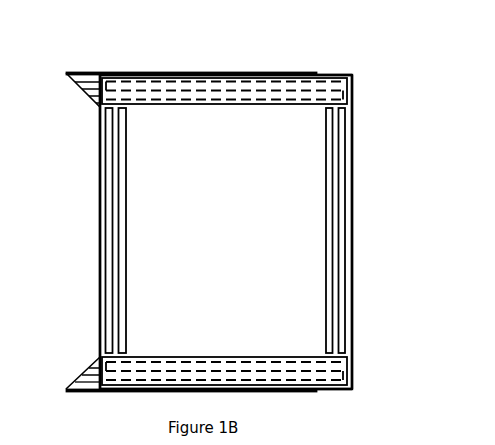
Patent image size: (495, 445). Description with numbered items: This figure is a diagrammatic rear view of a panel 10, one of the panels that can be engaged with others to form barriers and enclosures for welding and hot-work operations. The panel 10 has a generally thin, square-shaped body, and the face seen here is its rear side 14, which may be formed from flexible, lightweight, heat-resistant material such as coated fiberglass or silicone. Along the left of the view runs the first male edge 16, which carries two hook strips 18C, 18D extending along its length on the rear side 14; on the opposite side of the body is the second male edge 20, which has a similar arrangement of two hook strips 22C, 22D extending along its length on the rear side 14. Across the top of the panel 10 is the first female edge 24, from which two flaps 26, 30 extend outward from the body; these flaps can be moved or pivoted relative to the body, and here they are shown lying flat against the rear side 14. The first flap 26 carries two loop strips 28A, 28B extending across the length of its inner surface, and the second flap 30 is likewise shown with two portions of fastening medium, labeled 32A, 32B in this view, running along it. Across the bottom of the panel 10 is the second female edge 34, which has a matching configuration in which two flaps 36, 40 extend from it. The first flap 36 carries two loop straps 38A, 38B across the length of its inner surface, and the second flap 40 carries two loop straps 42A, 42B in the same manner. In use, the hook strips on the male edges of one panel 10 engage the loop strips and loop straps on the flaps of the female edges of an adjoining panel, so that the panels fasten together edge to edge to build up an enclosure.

The panel 10 is at (410, 399).
The rear side 14 is at (235, 242).
The first male edge 16 is at (100, 232).
The hook strip 18C is at (108, 303).
The hook strip 18D is at (122, 260).
The second male edge 20 is at (352, 192).
The hook strip 22C is at (342, 267).
The hook strip 22D is at (330, 197).
The first female edge 24 is at (160, 105).
The first flap 26 is at (320, 75).
The loop strip 28A is at (263, 85).
The loop strip 28B is at (213, 99).
The second flap 30 is at (178, 72).
The top corner bracket 32A is at (95, 82).
The top corner bracket element 32B is at (97, 97).
The second female edge 34 is at (150, 357).
The first flap 36 is at (340, 389).
The loop strap 38A is at (268, 378).
The loop strap 38B is at (217, 363).
The second flap 40 is at (82, 392).
The loop strap 42A is at (82, 383).
The loop strap 42B is at (98, 370).